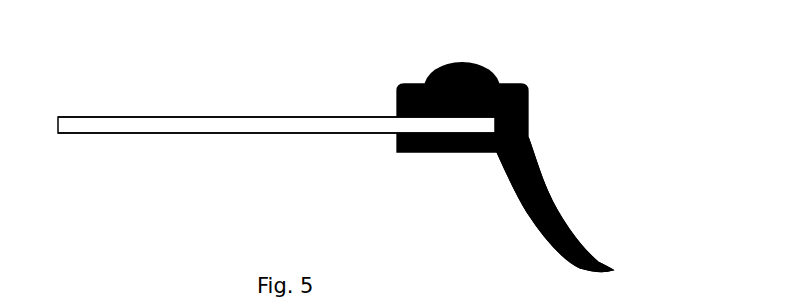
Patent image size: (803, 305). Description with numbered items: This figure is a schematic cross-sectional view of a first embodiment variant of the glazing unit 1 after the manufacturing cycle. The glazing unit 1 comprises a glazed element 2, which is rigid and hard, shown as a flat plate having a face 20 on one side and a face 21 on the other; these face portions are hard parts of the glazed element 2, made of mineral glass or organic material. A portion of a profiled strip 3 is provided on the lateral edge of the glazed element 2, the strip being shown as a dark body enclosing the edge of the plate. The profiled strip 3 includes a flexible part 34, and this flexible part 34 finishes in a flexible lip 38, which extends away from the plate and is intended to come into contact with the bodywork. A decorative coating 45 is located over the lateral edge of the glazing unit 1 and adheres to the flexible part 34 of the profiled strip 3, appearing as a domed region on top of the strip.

The glazing unit 1 is at (385, 140).
The glazed element 2 is at (276, 122).
The face of the glazed element 20 is at (249, 117).
The face of the glazed element 21 is at (282, 134).
The profiled strip 3 is at (536, 140).
The flexible part 34 is at (507, 83).
The flexible lip 38 is at (528, 138).
The decorative coating 45 is at (443, 70).